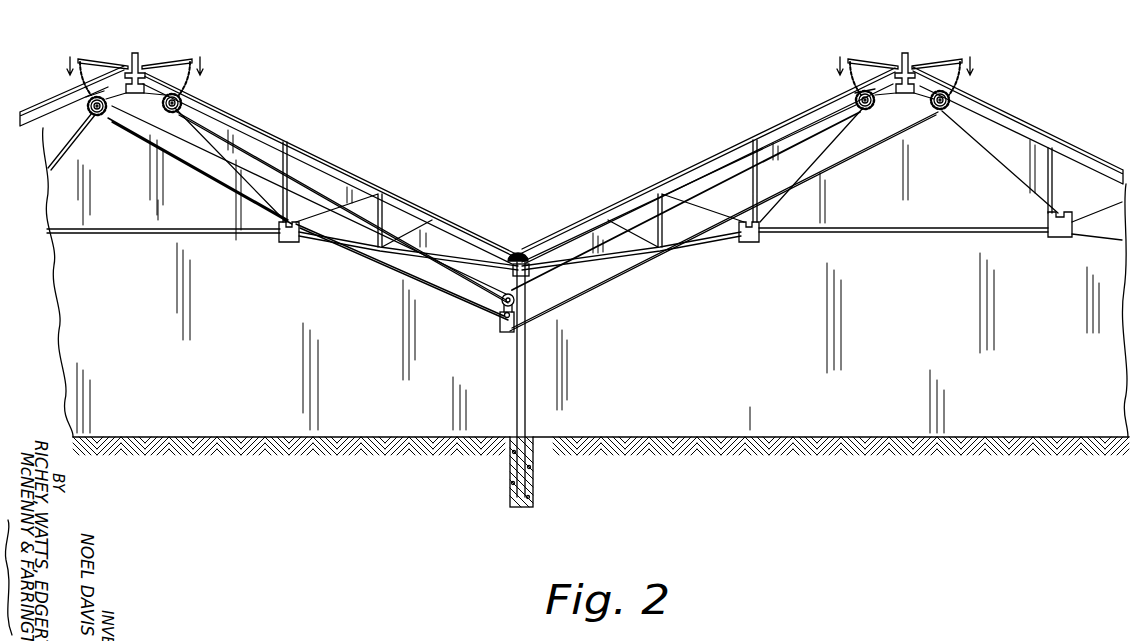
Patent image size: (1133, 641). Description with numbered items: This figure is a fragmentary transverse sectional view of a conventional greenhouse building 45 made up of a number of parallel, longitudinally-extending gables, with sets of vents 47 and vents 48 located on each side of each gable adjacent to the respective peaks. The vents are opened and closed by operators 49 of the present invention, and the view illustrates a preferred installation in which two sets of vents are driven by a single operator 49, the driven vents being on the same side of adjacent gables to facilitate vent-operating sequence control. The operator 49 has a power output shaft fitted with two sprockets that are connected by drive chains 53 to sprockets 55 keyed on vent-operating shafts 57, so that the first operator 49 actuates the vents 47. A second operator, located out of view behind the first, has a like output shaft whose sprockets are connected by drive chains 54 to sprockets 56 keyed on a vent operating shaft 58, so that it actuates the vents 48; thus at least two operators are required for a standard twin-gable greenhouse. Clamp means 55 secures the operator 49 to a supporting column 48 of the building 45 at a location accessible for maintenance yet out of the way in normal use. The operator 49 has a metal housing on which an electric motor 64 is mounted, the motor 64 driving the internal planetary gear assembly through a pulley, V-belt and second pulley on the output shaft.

The greenhouse building 45 is at (615, 207).
The vents 47 is at (176, 58).
The vents / supporting column 48 is at (93, 58).
The operator 49 is at (497, 328).
The drive chains 53 is at (323, 188).
The drive chains 54 is at (192, 170).
The sprockets / clamp means 55 is at (207, 97).
The sprockets 56 is at (85, 94).
The vent-operating shafts 57 is at (186, 90).
The vent operating shaft 58 is at (98, 118).
The electric motor 64 is at (508, 295).